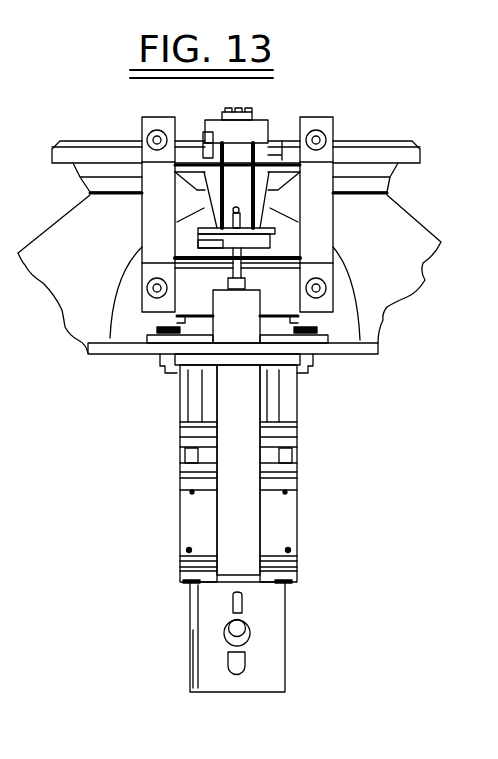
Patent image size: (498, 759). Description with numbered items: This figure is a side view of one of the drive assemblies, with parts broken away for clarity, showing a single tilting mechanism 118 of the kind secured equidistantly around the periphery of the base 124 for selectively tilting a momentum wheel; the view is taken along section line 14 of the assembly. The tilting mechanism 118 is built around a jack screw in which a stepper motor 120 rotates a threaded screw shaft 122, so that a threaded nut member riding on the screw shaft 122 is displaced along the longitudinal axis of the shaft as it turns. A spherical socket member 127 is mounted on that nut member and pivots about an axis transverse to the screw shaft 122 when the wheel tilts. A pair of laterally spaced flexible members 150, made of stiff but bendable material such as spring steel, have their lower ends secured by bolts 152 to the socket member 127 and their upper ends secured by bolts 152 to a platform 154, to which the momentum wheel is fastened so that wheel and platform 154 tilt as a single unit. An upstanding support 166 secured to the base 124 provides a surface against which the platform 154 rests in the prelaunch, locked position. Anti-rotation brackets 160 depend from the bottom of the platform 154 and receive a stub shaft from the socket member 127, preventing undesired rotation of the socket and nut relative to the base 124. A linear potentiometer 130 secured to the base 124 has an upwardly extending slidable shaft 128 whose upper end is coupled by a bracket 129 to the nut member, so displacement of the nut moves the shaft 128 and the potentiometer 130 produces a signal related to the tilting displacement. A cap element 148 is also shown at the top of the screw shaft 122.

The section line 14- 14 is at (240, 97).
The tilting mechanism 118 is at (58, 335).
The stepper motor 120 is at (284, 511).
The threaded screw shaft 122 is at (240, 183).
The base 124 is at (136, 355).
The spherical socket member 127 is at (300, 268).
The slidable shaft 128 is at (198, 242).
The bracket 129 is at (205, 237).
The linear potentiometer 130 is at (245, 413).
The cap nut 148 is at (335, 132).
The flexible members 150 is at (148, 185).
The bolts 152 is at (157, 130).
The platform 154 is at (402, 141).
The anti-rotation brackets 160 is at (203, 163).
The upstanding support 166 is at (387, 306).